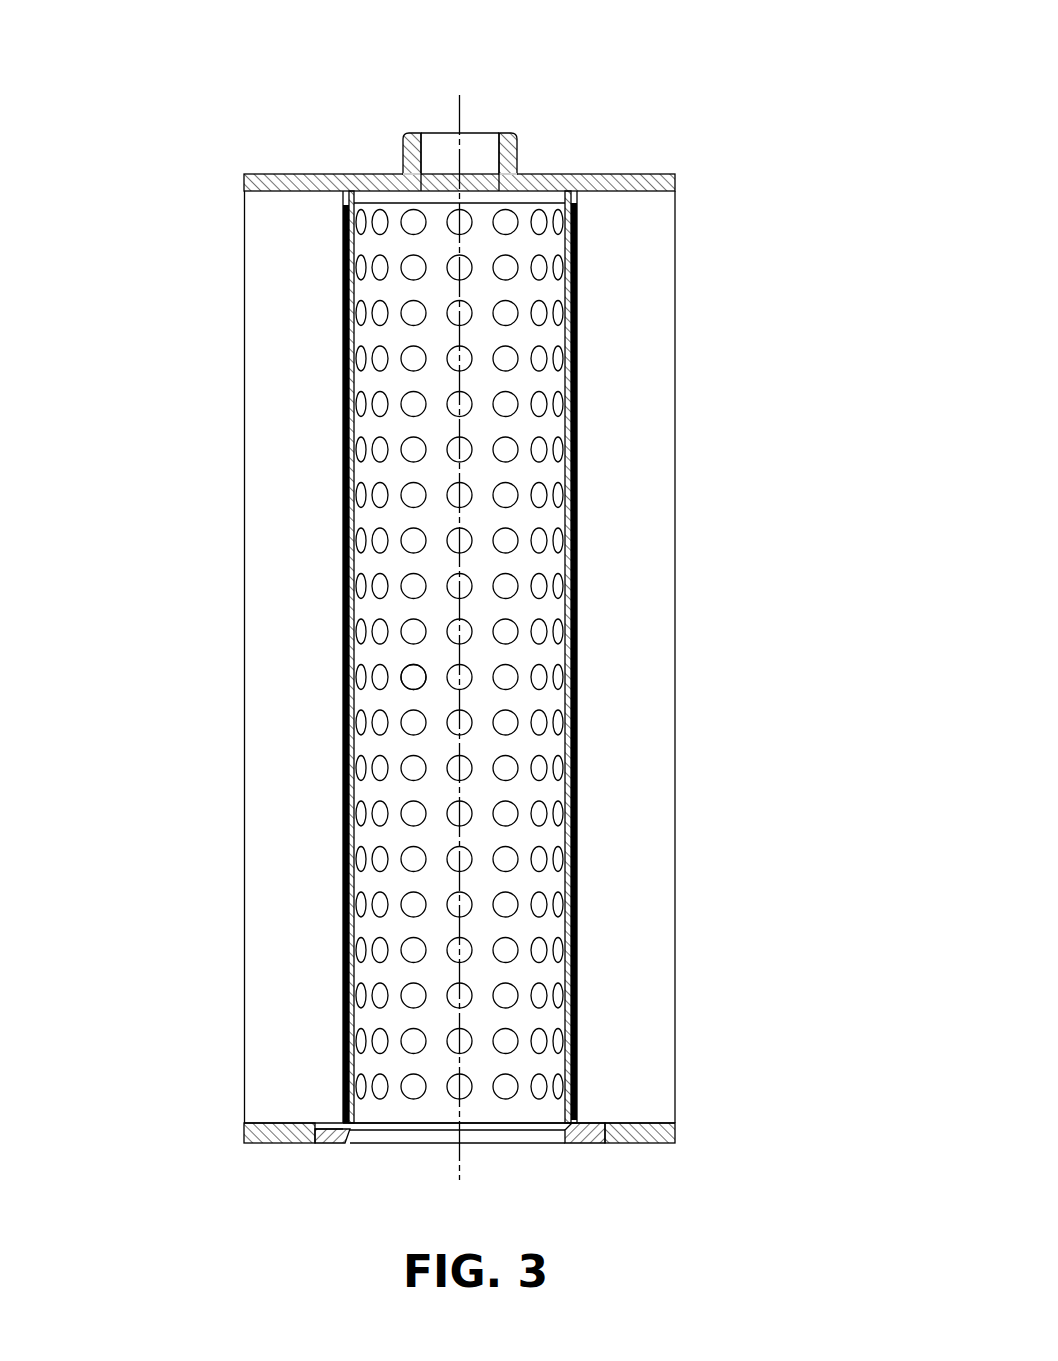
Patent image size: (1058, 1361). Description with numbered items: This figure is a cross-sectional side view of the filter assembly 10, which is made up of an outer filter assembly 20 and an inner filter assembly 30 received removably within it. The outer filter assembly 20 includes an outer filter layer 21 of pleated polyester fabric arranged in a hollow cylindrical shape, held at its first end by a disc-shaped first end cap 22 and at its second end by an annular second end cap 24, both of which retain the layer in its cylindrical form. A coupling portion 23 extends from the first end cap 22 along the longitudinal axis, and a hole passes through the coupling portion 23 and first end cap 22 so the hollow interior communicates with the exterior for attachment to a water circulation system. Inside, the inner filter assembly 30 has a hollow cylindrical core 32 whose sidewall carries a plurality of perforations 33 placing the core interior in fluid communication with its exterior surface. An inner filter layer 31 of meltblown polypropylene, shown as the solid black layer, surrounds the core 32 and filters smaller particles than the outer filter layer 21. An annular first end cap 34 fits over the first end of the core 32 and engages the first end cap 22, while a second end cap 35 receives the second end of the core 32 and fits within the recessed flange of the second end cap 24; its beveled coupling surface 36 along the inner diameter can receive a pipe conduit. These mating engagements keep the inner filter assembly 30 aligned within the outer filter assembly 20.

The filter assembly 10 is at (662, 113).
The outer filter assembly 20 is at (212, 466).
The outer filter layer 21 is at (292, 765).
The first end cap 22 is at (677, 180).
The coupling portion 23 is at (405, 133).
The second end cap 24 is at (628, 1143).
The inner filter assembly 30 is at (583, 902).
The inner filter layer 31 is at (345, 388).
The hollow cylindrical core 32 is at (523, 563).
The perforations 33 is at (407, 675).
The first end cap 34 is at (487, 195).
The second end cap 35 is at (588, 1143).
The beveled coupling surface 36 is at (348, 1143).